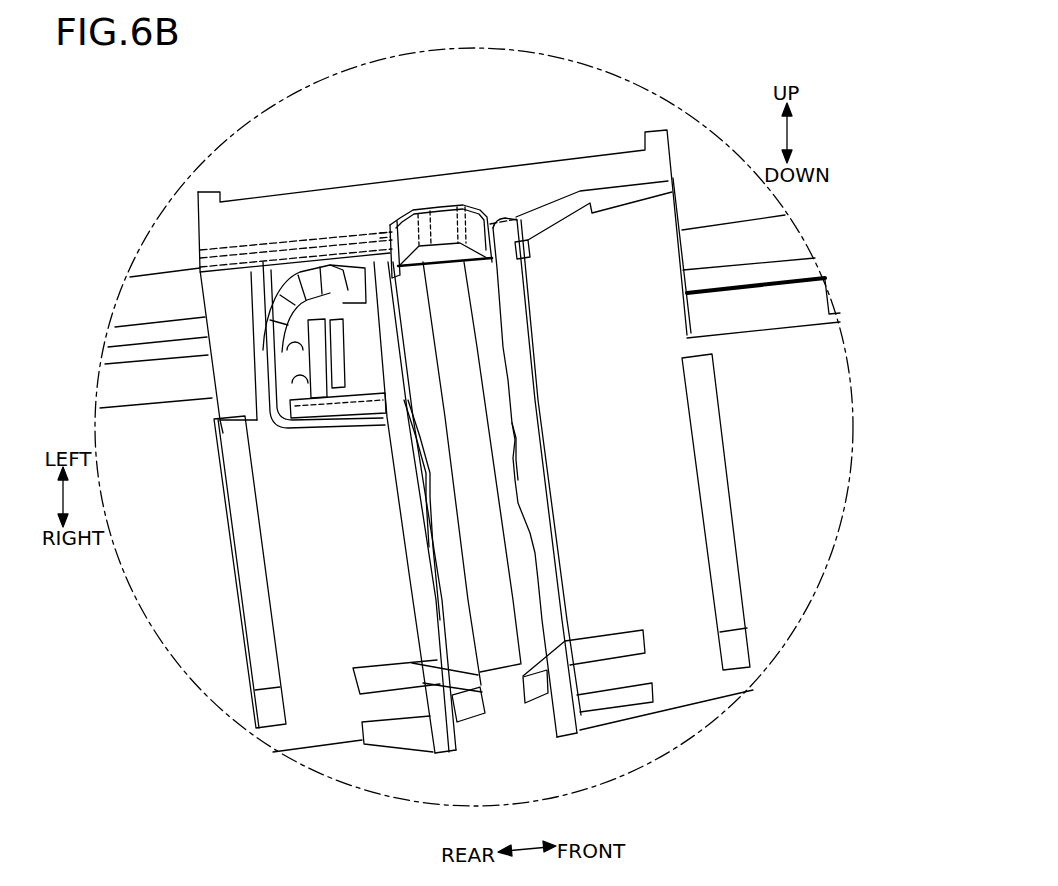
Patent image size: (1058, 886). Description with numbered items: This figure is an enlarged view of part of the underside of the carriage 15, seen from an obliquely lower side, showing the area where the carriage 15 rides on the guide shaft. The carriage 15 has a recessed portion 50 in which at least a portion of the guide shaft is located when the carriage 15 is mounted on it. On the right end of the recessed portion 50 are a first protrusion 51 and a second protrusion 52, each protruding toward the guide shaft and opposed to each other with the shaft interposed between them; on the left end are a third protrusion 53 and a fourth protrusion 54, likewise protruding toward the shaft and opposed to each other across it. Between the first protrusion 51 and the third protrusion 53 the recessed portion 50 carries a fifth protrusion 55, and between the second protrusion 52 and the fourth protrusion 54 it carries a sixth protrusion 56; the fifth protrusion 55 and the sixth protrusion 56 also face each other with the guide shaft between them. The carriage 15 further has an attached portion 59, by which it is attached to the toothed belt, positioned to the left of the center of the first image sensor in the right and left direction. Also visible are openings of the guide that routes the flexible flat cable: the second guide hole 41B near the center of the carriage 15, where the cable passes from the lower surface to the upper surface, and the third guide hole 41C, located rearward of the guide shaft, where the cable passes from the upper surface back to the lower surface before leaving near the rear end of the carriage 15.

The carriage 15 is at (211, 683).
The second guide hole 41B is at (712, 487).
The third guide hole 41C is at (247, 540).
The recessed portion 50 is at (490, 583).
The first protrusion 51 is at (550, 717).
The second protrusion 52 is at (462, 730).
The third protrusion 53 is at (465, 242).
The fourth protrusion 54 is at (397, 250).
The fifth protrusion 55 is at (523, 488).
The sixth protrusion 56 is at (427, 493).
The attached portion 59 is at (327, 347).